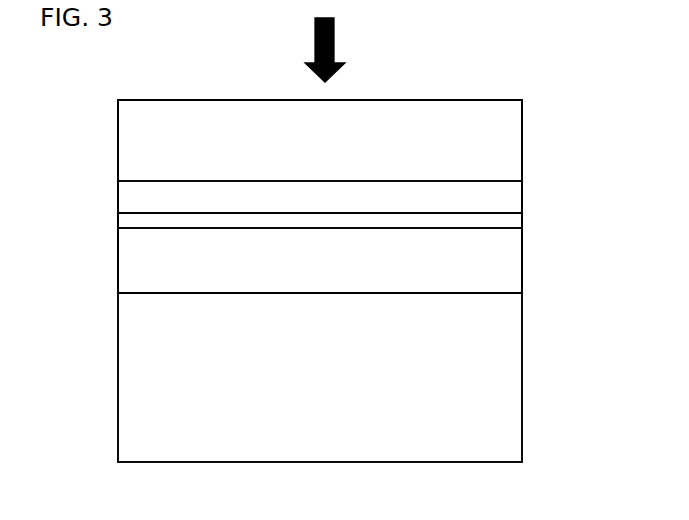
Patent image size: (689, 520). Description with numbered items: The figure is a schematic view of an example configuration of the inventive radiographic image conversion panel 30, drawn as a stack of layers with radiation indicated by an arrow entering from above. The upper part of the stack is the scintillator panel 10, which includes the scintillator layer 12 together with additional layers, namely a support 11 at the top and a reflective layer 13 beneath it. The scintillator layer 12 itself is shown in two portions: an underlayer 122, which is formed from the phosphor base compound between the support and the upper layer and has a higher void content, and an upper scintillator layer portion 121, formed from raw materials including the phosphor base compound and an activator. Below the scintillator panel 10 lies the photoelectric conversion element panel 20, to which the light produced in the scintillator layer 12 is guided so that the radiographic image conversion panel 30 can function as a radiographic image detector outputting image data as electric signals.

The scintillator panel 10 is at (110, 100).
The photoelectric conversion element panel 20 is at (103, 293).
The support 11 is at (515, 165).
The reflective layer 13 is at (514, 197).
The scintillator layer 12 is at (617, 187).
The underlayer 122 is at (514, 227).
The upper scintillator layer portion 121 is at (514, 260).
The inventive radiographic image conversion panel 30 is at (386, 78).